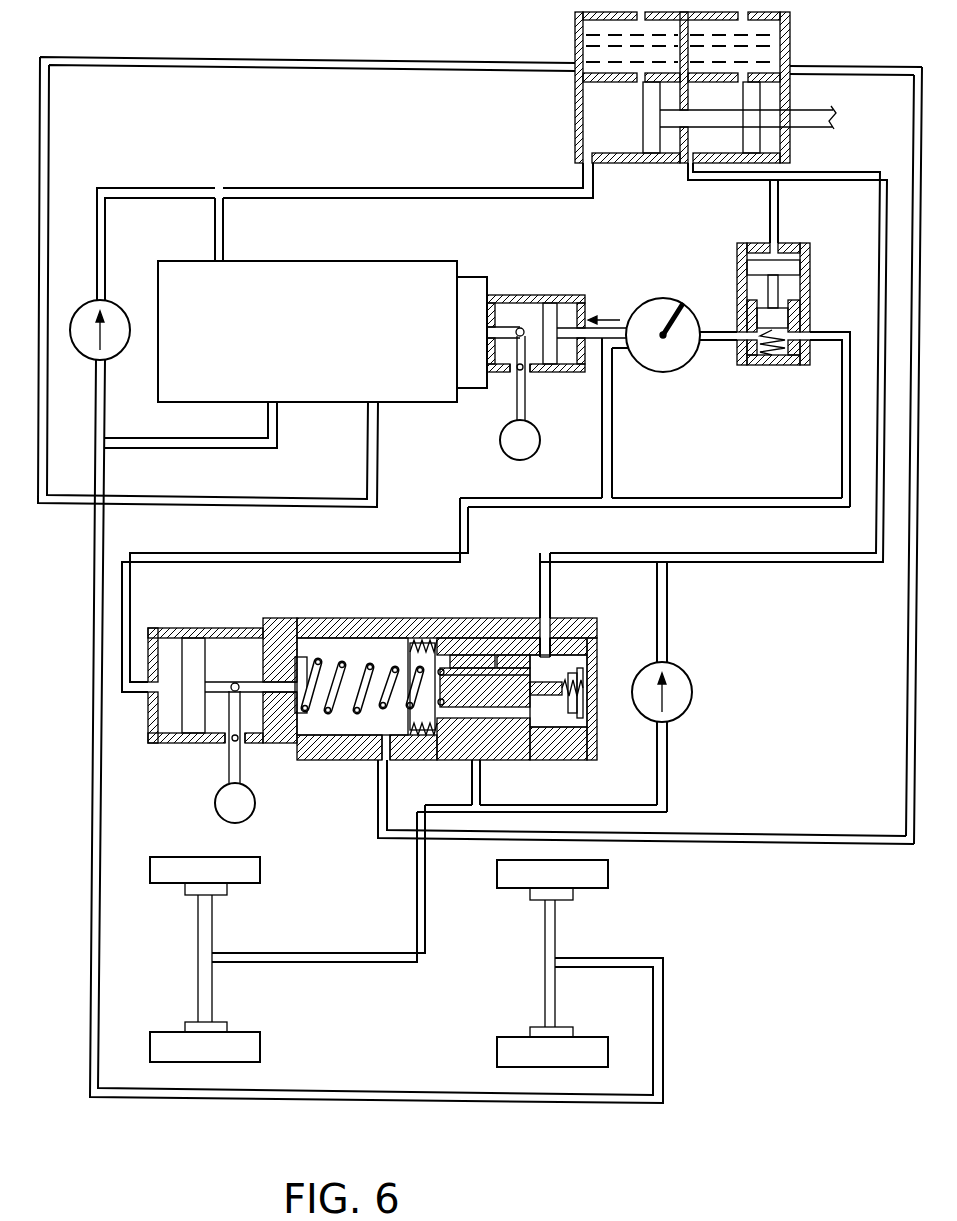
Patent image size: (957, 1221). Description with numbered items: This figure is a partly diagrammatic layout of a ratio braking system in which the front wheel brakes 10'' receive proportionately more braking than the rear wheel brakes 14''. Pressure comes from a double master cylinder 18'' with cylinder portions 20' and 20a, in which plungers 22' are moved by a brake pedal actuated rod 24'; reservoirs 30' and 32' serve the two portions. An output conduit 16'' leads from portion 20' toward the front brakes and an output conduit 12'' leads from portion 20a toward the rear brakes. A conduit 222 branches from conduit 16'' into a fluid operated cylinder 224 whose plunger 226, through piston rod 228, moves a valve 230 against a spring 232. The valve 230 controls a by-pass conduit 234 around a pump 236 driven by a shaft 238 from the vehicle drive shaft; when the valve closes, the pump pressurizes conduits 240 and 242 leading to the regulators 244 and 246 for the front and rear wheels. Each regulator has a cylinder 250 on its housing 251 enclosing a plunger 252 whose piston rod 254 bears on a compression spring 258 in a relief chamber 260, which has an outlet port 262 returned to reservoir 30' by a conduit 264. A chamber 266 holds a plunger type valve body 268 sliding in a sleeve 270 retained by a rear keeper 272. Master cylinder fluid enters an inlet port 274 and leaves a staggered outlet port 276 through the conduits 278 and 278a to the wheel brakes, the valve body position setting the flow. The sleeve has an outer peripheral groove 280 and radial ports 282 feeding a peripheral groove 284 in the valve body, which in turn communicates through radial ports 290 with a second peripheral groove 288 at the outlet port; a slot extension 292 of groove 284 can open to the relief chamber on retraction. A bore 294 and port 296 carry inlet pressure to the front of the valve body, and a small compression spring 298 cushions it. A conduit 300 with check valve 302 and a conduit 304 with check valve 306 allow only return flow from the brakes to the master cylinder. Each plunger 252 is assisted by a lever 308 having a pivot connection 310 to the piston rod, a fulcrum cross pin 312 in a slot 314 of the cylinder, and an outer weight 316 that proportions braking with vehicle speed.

The front wheel brakes 10'' is at (205, 959).
The output conduit 12'' is at (408, 180).
The rear wheel brakes 14'' is at (552, 963).
The output conduit 16'' is at (713, 362).
The double master cylinder 18'' is at (641, 87).
The cylinder portion 20' is at (762, 150).
The cylinder portion 20a is at (603, 125).
The plunger 22' is at (684, 117).
The brake pedal actuated rod 24' is at (767, 119).
The reservoir 30' is at (762, 43).
The reservoir 32' is at (608, 45).
The conduit 222 is at (778, 215).
The fluid operated cylinder 224 is at (736, 251).
The plunger 226 is at (796, 268).
The piston rod 228 is at (779, 292).
The valve 230 is at (786, 322).
The spring 232 is at (763, 366).
The conduit 234 is at (711, 343).
The pump 236 is at (664, 373).
The shaft 238 is at (681, 305).
The conduit 240 is at (460, 524).
The conduit 242 is at (614, 350).
The regulator 244 is at (337, 745).
The regulator 246 is at (326, 260).
The cylinder 250 is at (583, 298).
The housing 251 is at (403, 270).
The plunger 252 is at (548, 310).
The piston rod 254 is at (503, 325).
The compression spring 258 is at (340, 660).
The relief chamber 260 is at (367, 655).
The outlet port 262 is at (378, 766).
The conduit 264 is at (778, 838).
The chamber 266 is at (510, 652).
The valve body 268 is at (573, 688).
The sleeve 270 is at (422, 736).
The rear keeper 272 is at (425, 640).
The inlet port 274 is at (224, 230).
The outlet port 276 is at (275, 395).
The conduit 278 is at (213, 440).
The conduit 278a is at (405, 1094).
The outer peripheral groove 280 is at (553, 655).
The radial ports 282 is at (532, 658).
The peripheral groove 284 is at (540, 697).
The second peripheral groove 288 is at (462, 737).
The radial ports 290 is at (505, 742).
The slot extension 292 is at (446, 660).
The bore 294 is at (565, 737).
The port 296 is at (500, 656).
The small compression spring 298 is at (588, 695).
The conduit 300 is at (668, 618).
The check valve 302 is at (690, 701).
The conduit 304 is at (148, 188).
The check valve 306 is at (91, 312).
The lever 308 is at (517, 410).
The pivot connection 310 is at (522, 328).
The cross pin 312 is at (523, 372).
The slot 314 is at (538, 368).
The weight 316 is at (500, 440).